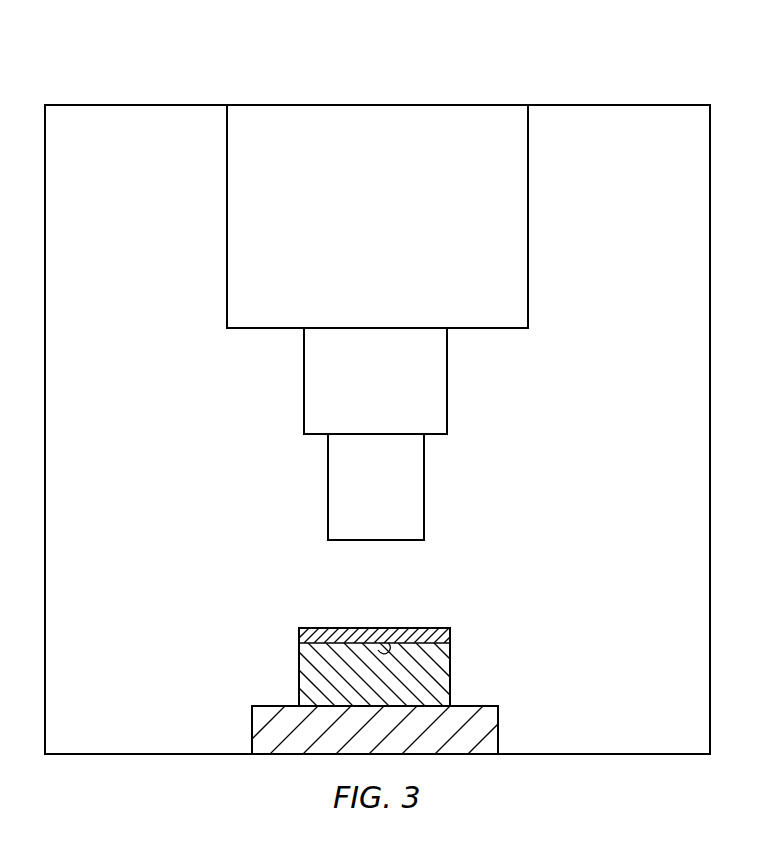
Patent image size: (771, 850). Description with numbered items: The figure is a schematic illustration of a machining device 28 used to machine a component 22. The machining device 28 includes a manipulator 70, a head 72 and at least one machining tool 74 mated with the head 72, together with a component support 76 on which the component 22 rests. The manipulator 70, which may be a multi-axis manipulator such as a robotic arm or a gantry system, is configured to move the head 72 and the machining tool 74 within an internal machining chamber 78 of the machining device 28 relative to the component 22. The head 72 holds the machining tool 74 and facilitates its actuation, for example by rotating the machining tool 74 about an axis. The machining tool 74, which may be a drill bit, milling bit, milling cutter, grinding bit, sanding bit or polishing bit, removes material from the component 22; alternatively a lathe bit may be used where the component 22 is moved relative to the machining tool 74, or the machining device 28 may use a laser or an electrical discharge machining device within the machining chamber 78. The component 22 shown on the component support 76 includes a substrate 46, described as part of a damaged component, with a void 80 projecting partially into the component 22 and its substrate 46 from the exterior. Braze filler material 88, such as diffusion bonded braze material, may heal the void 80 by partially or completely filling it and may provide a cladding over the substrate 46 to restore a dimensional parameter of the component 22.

The machining device 28 is at (705, 49).
The manipulator 70 is at (528, 230).
The head 72 is at (447, 388).
The machining tool 74 is at (424, 505).
The component support 76 is at (498, 729).
The internal machining chamber 78 is at (141, 498).
The component 22 is at (394, 637).
The substrate 46 is at (299, 668).
The void 80 is at (372, 657).
The braze filler material 88 is at (432, 638).